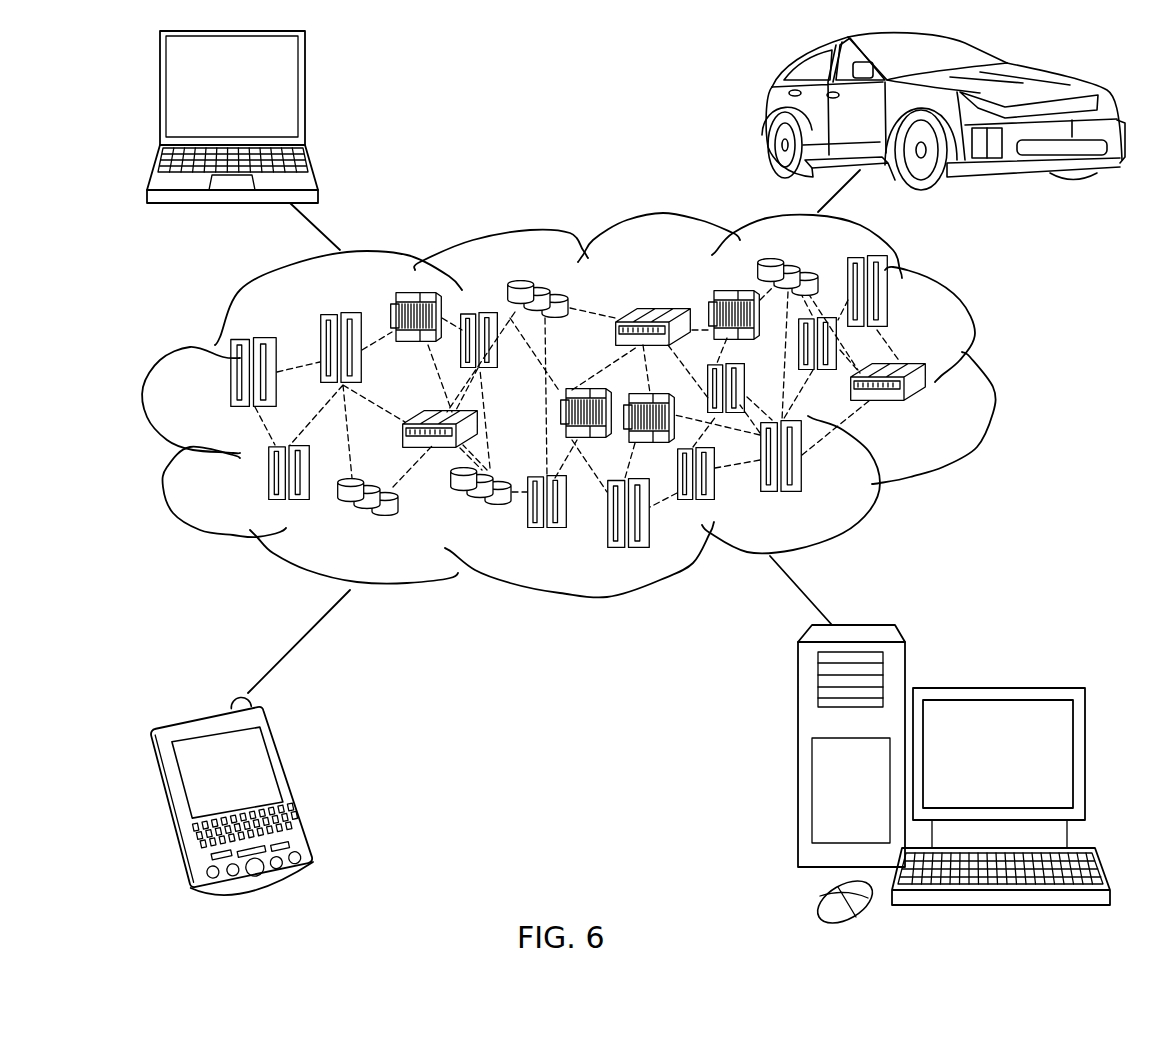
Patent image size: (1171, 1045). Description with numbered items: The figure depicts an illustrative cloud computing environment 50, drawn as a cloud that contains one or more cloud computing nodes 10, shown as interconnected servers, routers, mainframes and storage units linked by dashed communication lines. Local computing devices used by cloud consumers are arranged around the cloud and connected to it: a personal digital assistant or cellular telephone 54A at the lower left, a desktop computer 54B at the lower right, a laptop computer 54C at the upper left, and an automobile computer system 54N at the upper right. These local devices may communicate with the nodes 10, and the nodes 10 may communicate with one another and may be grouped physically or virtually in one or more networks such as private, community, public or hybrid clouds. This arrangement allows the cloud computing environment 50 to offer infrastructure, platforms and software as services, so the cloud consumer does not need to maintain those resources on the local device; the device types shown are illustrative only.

The cloud computing node 10 is at (933, 414).
The cloud computing environment 50 is at (997, 383).
The personal digital assistant or cellular telephone 54A is at (294, 788).
The desktop computer 54B is at (997, 688).
The laptop computer 54C is at (306, 95).
The automobile computer system 54N is at (766, 108).